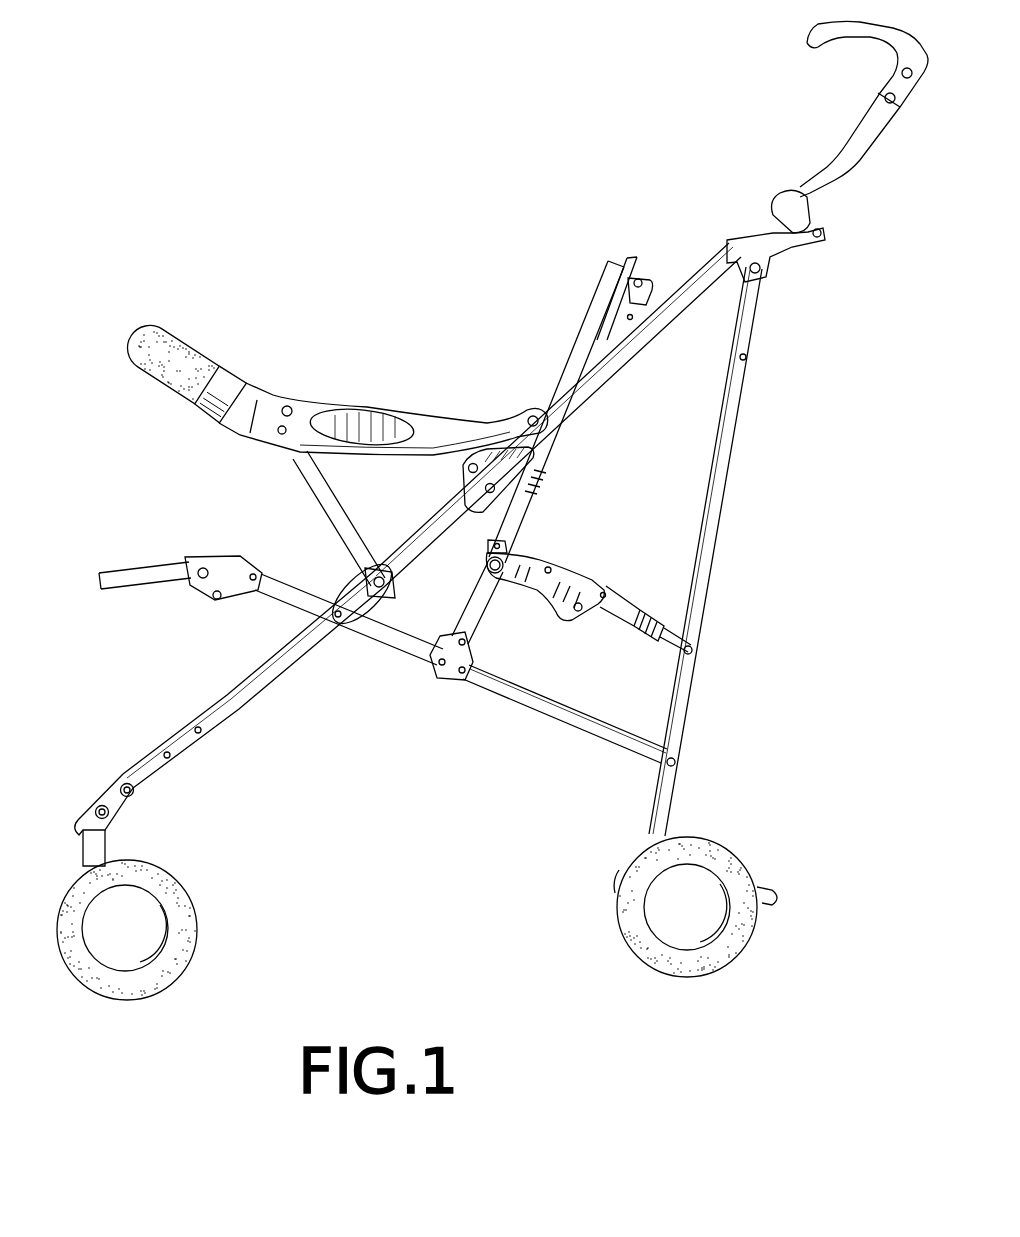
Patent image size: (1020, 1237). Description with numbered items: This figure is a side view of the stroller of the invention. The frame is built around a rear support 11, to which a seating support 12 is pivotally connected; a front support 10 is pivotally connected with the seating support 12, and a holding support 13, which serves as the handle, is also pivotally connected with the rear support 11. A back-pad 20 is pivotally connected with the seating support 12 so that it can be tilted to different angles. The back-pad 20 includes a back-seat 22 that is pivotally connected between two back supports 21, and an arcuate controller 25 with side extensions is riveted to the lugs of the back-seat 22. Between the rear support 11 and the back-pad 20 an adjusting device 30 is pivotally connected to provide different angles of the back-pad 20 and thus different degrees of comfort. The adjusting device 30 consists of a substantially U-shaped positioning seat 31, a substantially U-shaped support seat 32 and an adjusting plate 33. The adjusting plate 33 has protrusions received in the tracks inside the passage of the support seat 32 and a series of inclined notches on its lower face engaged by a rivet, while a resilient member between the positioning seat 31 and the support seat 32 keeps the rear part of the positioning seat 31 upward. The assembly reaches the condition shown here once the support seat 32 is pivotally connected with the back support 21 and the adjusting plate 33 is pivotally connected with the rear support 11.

The front support 10 is at (270, 672).
The rear support 11 is at (708, 570).
The seating support 12 is at (560, 720).
The holding support 13 is at (617, 350).
The back-pad 20 is at (588, 458).
The back support 21 is at (478, 593).
The back-seat 22 is at (540, 506).
The arcuate controller 25 is at (645, 300).
The adjusting device 30 is at (625, 620).
The positioning seat 31 is at (536, 560).
The support seat 32 is at (597, 607).
The adjusting plate 33 is at (660, 637).